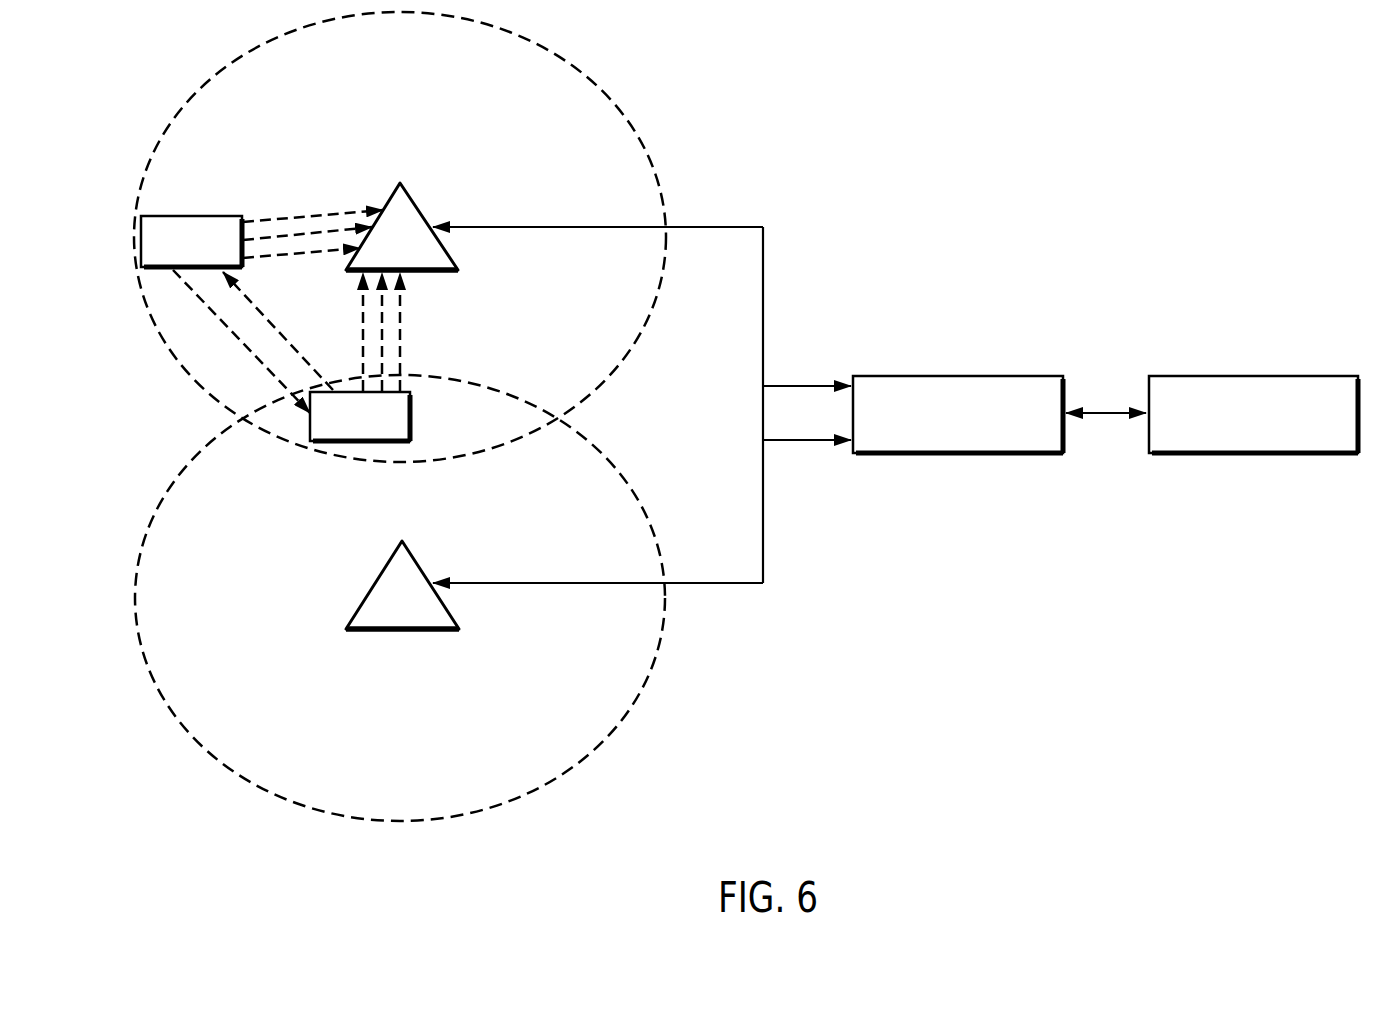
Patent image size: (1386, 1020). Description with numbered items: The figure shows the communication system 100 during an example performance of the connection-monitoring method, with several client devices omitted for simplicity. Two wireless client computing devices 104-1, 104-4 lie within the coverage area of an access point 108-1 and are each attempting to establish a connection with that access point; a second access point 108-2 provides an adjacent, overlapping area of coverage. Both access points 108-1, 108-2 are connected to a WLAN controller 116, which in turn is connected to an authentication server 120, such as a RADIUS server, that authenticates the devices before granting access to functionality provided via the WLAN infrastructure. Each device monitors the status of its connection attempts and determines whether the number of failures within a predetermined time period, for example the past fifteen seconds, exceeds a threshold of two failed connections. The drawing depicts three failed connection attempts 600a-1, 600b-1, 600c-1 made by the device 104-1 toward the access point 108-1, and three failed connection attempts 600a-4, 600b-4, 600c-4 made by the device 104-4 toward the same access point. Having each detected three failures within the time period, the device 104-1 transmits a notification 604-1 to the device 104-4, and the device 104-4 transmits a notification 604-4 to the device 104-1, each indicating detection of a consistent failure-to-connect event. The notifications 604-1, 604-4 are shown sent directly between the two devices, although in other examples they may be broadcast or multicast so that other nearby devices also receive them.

The communication system 100 is at (906, 97).
The wireless client computing device 104-1 is at (140, 239).
The wireless client computing device 104-4 is at (411, 418).
The access point 108-1 is at (417, 210).
The access point 108-2 is at (372, 580).
The WLAN controller 116 is at (960, 455).
The authentication server 120 is at (1257, 455).
The failed connection attempt 600a-1 is at (265, 220).
The failed connection attempt 600b-1 is at (312, 233).
The failed connection attempt 600c-1 is at (300, 253).
The failed connection attempt 600a-4 is at (402, 297).
The failed connection attempt 600b-4 is at (384, 322).
The failed connection attempt 600c-4 is at (365, 342).
The notification 604-1 is at (214, 314).
The notification 604-4 is at (280, 334).